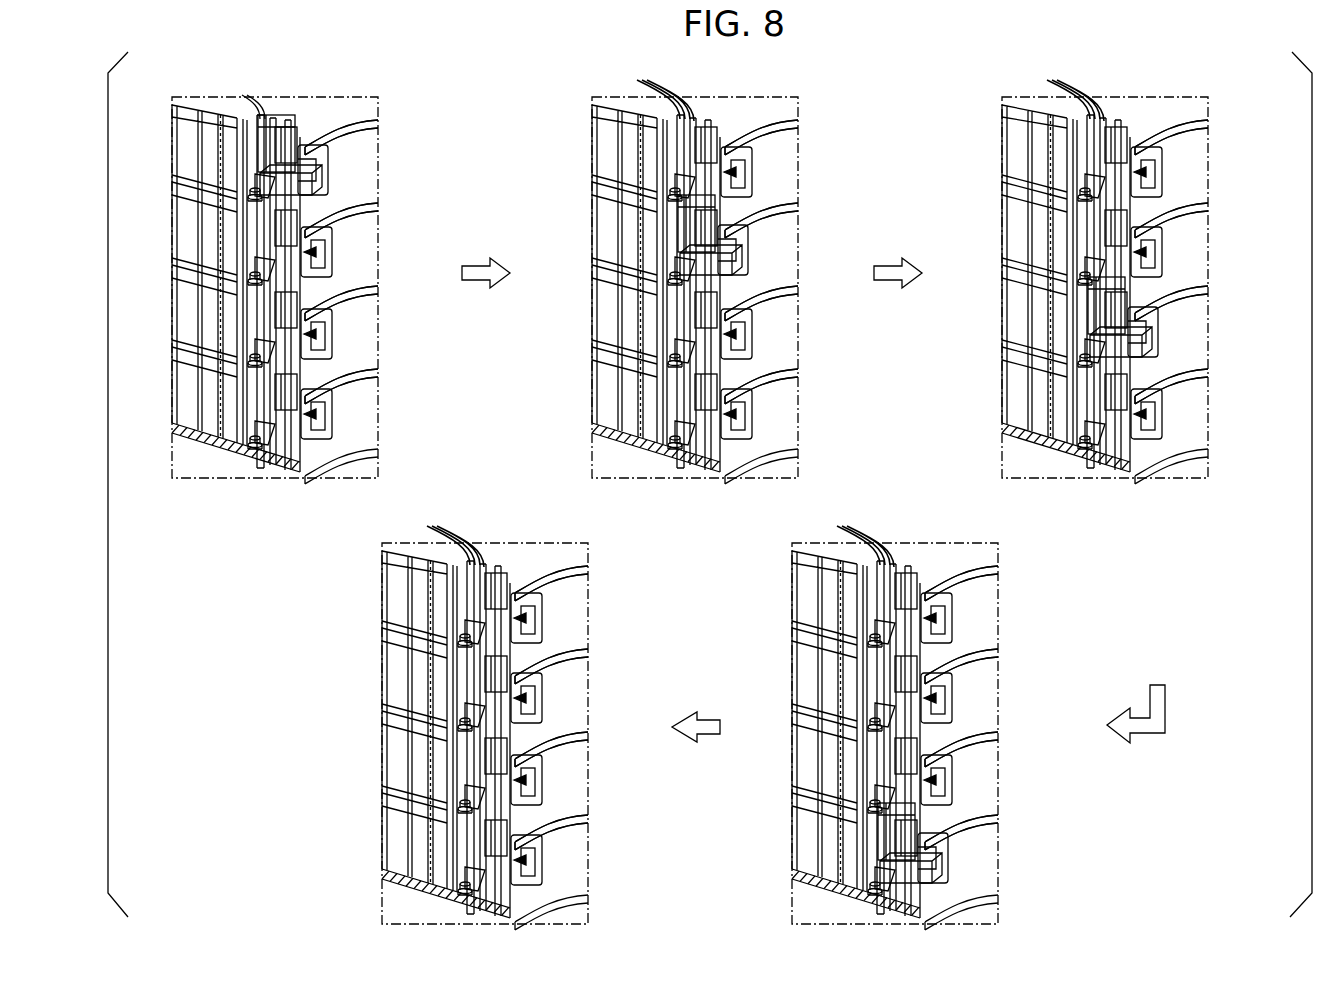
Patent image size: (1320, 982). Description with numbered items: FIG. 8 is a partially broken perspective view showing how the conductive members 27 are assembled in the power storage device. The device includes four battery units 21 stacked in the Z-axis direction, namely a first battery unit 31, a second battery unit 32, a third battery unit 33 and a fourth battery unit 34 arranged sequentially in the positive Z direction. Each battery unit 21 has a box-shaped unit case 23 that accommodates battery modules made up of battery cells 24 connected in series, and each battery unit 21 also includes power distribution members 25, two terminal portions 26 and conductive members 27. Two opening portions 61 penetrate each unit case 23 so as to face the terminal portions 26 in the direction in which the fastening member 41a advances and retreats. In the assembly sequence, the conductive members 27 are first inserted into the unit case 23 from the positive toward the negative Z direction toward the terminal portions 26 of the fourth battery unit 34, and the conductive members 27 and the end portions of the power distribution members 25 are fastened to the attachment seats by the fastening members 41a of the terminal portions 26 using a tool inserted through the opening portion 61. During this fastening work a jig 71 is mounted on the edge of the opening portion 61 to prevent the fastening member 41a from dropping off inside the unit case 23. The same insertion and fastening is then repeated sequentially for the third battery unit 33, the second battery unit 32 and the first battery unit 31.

The battery unit 21 is at (355, 161).
The unit case 23 is at (322, 188).
The battery cell 24 is at (207, 163).
The power distribution member 25 is at (256, 134).
The terminal portion 26 is at (296, 138).
The conductive member 27 is at (258, 120).
The first battery unit 31 is at (801, 619).
The second battery unit 32 is at (801, 535).
The third battery unit 33 is at (801, 451).
The fourth battery unit 34 is at (801, 374).
The fastening member 41a is at (266, 152).
The opening portion 61 is at (304, 238).
The jig 71 is at (325, 146).